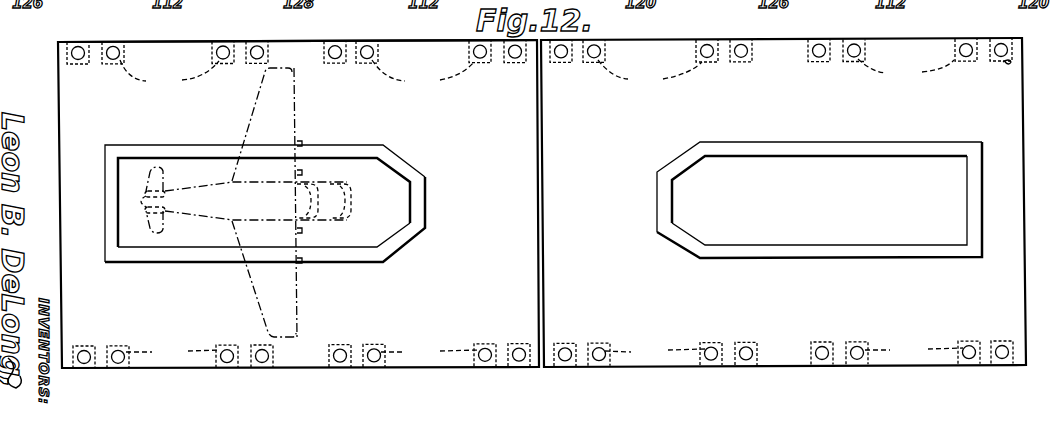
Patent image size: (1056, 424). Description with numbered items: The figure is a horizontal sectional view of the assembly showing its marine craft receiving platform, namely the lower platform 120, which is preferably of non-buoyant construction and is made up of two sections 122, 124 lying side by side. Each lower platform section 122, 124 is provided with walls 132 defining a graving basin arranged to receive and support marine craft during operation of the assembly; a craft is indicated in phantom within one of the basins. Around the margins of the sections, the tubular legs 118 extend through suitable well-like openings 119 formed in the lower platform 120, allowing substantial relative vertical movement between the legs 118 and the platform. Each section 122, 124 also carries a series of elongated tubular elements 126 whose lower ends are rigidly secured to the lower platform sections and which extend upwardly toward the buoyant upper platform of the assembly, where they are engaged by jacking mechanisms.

The tubular leg 118 is at (216, 51).
The well-like opening 119 is at (1008, 60).
The lower platform 120 is at (55, 82).
The lower platform section 122 is at (784, 39).
The lower platform section 124 is at (305, 42).
The elongated tubular element 126 is at (80, 46).
The walls defining a graving basin 132 is at (336, 157).